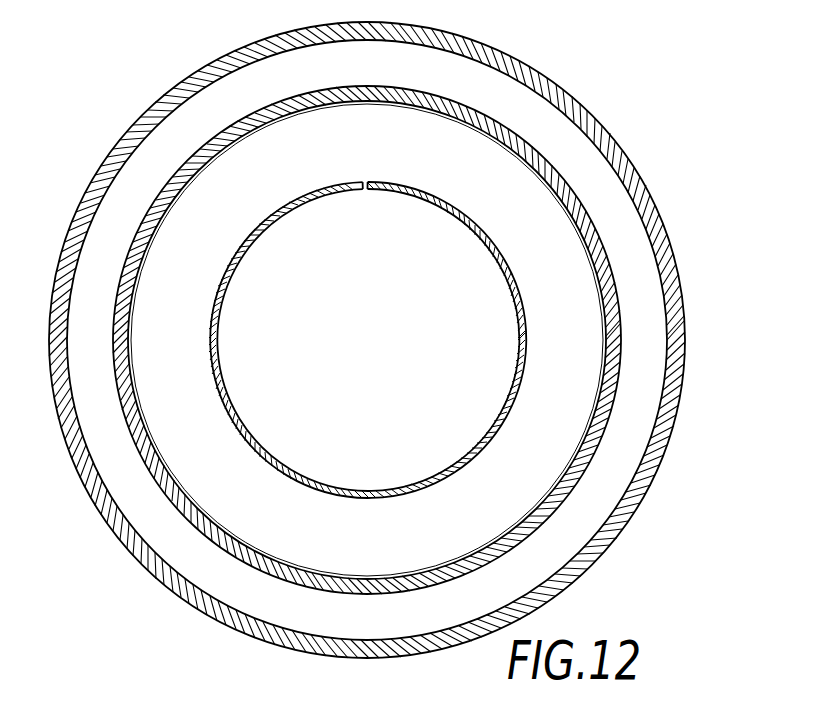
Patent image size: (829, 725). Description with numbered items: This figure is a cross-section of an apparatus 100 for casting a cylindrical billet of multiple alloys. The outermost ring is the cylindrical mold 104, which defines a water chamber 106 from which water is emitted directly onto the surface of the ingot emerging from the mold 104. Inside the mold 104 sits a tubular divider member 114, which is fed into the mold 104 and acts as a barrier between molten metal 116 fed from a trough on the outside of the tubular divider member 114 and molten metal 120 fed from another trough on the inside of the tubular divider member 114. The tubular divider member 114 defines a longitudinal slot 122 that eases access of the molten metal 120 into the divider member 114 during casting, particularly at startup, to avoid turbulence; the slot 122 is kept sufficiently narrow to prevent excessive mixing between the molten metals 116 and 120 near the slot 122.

The apparatus 100 is at (626, 92).
The cylindrical mold 104 is at (677, 270).
The water chamber 106 is at (653, 394).
The tubular divider member 114 is at (444, 206).
The molten metal 116 is at (278, 180).
The molten metal 120 is at (373, 364).
The longitudinal slot 122 is at (364, 189).